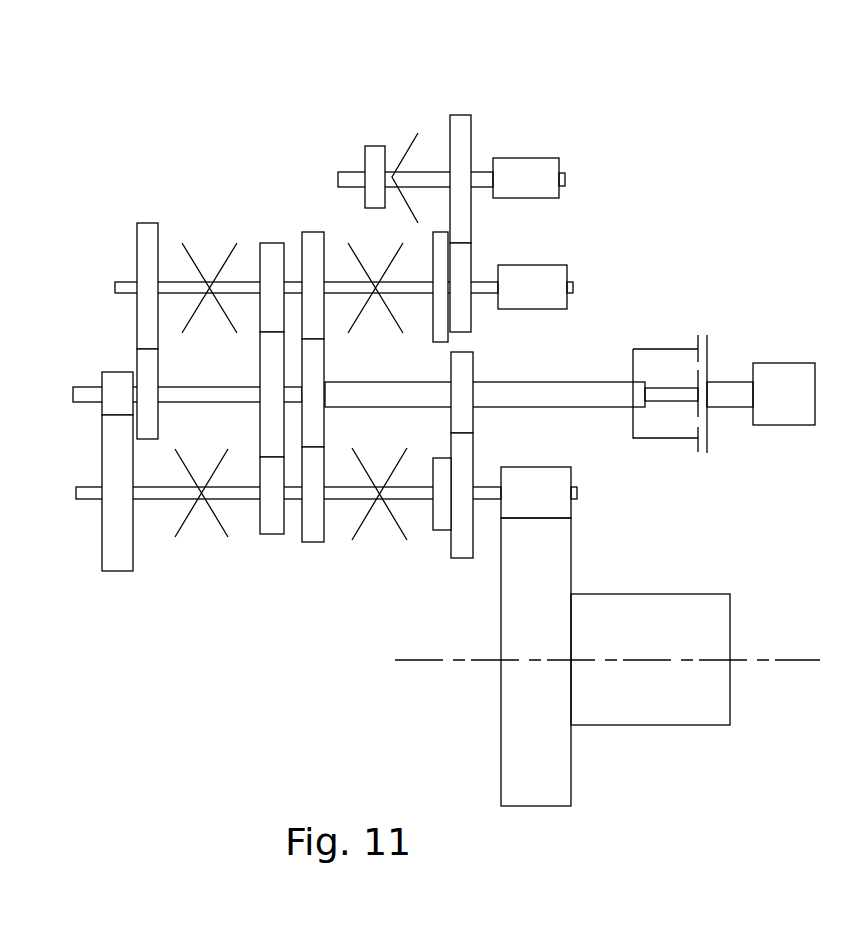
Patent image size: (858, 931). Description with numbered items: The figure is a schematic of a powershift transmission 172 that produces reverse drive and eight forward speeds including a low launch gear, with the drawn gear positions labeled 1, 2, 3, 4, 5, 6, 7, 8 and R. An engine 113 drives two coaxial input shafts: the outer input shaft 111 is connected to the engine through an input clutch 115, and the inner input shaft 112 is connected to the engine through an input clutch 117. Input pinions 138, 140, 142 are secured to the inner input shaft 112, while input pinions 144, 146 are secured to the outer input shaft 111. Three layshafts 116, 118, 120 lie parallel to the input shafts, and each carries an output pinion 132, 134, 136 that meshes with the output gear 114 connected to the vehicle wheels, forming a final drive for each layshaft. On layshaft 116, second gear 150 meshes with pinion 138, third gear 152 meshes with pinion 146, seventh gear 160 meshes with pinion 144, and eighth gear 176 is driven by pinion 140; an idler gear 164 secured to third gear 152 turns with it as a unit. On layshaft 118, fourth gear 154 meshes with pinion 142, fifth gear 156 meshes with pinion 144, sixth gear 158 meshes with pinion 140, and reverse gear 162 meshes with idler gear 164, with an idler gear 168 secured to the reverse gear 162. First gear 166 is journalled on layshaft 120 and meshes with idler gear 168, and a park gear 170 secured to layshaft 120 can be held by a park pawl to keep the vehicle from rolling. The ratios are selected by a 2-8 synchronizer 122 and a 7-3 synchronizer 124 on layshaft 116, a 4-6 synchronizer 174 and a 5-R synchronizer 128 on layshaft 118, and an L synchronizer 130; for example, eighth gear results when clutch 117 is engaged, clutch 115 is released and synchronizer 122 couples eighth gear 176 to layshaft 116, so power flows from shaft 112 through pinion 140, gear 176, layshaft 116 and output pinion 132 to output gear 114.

The powershift transmission 172 is at (196, 100).
The L synchronizer 130 is at (419, 127).
The park gear 170 is at (375, 146).
The third layshaft 120 is at (348, 180).
The sixth gear 158 is at (258, 260).
The fifth gear 156 is at (320, 243).
The 4-6 synchronizer 174 is at (215, 248).
The 5-R synchronizer 128 is at (382, 253).
The first gear 166 is at (462, 128).
The output pinion 136 is at (540, 165).
The fourth gear 154 is at (145, 248).
The second layshaft 118 is at (127, 280).
The idler gear 168 is at (462, 262).
The output pinion 134 is at (540, 278).
The input pinion 138 is at (117, 380).
The input pinion 140 is at (258, 372).
The inner input shaft 112 is at (162, 387).
The input pinion 144 is at (318, 363).
The reverse gear 162 is at (437, 318).
The input pinion 146 is at (462, 365).
The outer input shaft 111 is at (548, 378).
The input clutch 117 is at (697, 378).
The engine 113 is at (785, 363).
The 2-8 synchronizer 122 is at (210, 456).
The 7-3 synchronizer 124 is at (385, 444).
The third gear 152 is at (462, 455).
The input pinion 142 is at (147, 440).
The eighth gear 176 is at (260, 530).
The seventh gear 160 is at (322, 532).
The idler gear 164 is at (443, 520).
The output pinion 132 is at (557, 482).
The input clutch 115 is at (697, 445).
The first layshaft 116 is at (87, 496).
The second gear 150 is at (118, 550).
The output gear 114 is at (522, 615).
The first gear 1 is at (496, 209).
The second gear 2 is at (90, 471).
The third gear 3 is at (496, 464).
The fourth gear 4 is at (181, 397).
The fifth gear 5 is at (345, 311).
The sixth gear 6 is at (240, 318).
The seventh gear 7 is at (335, 525).
The eighth gear 8 is at (233, 530).
The reverse gear R is at (407, 280).